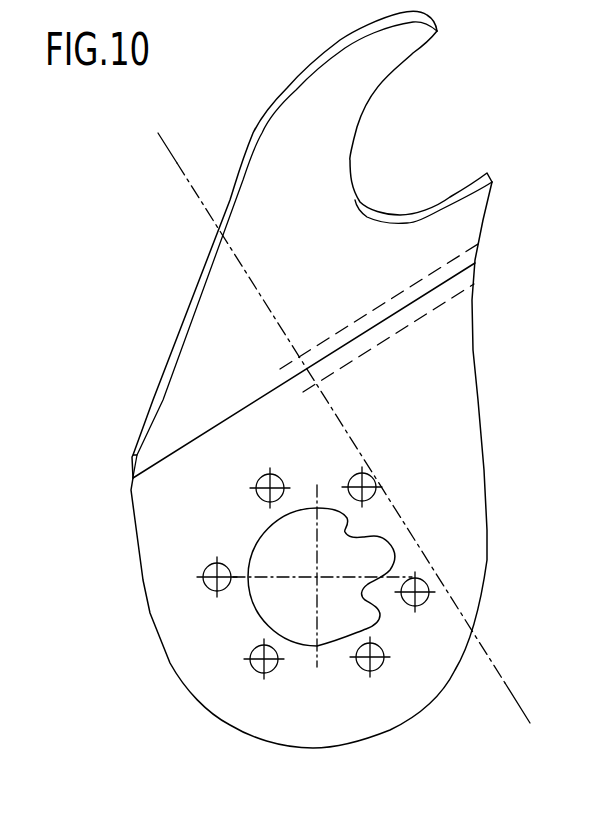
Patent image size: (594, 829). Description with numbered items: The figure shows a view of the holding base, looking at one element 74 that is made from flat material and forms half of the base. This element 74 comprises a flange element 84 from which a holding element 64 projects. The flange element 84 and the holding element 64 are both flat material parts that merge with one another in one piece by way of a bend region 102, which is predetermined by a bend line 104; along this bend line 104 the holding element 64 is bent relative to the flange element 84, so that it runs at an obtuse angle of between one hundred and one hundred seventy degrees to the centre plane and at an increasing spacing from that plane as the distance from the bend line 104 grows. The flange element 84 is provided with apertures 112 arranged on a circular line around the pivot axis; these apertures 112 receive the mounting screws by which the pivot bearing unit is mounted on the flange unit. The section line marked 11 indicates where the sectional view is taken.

The holding element 64 is at (312, 130).
The element 74 is at (452, 498).
The flange element 84 is at (463, 533).
The bend region 102 is at (455, 262).
The bend line 104 is at (422, 310).
The apertures 112 is at (372, 473).
The section line 11- 11 is at (143, 172).